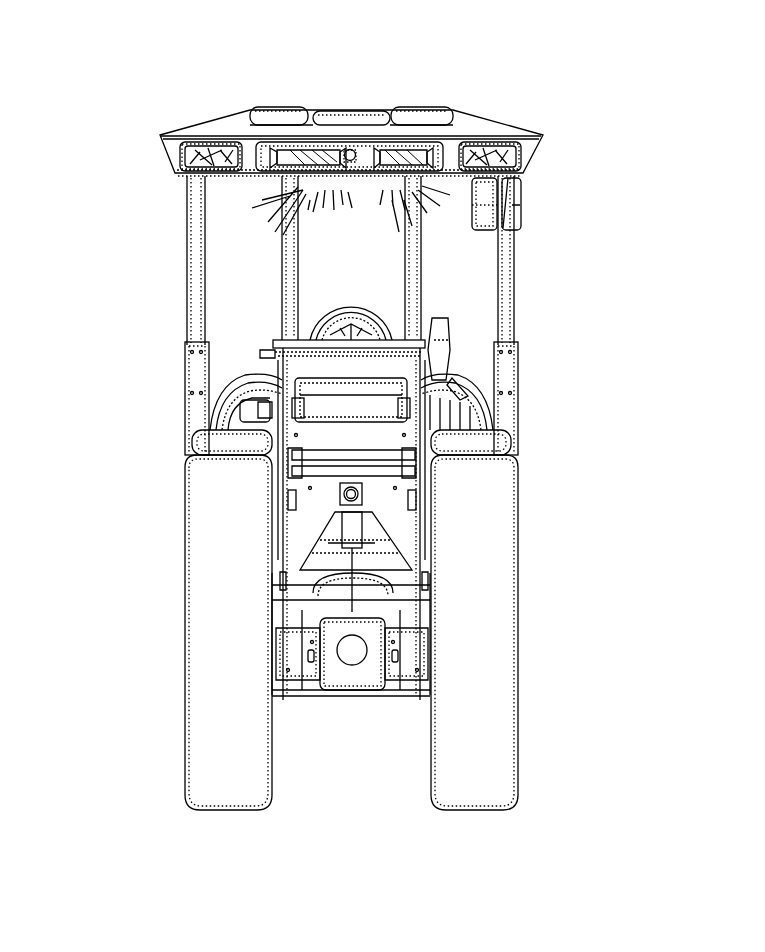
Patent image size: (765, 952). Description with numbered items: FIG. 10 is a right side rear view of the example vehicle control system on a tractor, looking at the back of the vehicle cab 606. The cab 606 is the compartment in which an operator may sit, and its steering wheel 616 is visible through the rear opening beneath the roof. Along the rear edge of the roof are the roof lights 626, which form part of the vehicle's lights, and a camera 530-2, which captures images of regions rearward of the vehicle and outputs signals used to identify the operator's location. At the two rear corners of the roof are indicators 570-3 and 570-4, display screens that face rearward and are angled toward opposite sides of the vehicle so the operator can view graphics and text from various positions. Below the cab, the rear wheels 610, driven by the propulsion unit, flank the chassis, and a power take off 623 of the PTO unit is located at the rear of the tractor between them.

The vehicle cab 606 is at (440, 288).
The indicator 570-3 is at (185, 155).
The indicator 570-4 is at (518, 160).
The roof lights 626 is at (319, 155).
The camera 530-2 is at (350, 172).
The steering wheel 616 is at (333, 320).
The rear wheels 610 is at (185, 733).
The power take off 623 is at (355, 682).